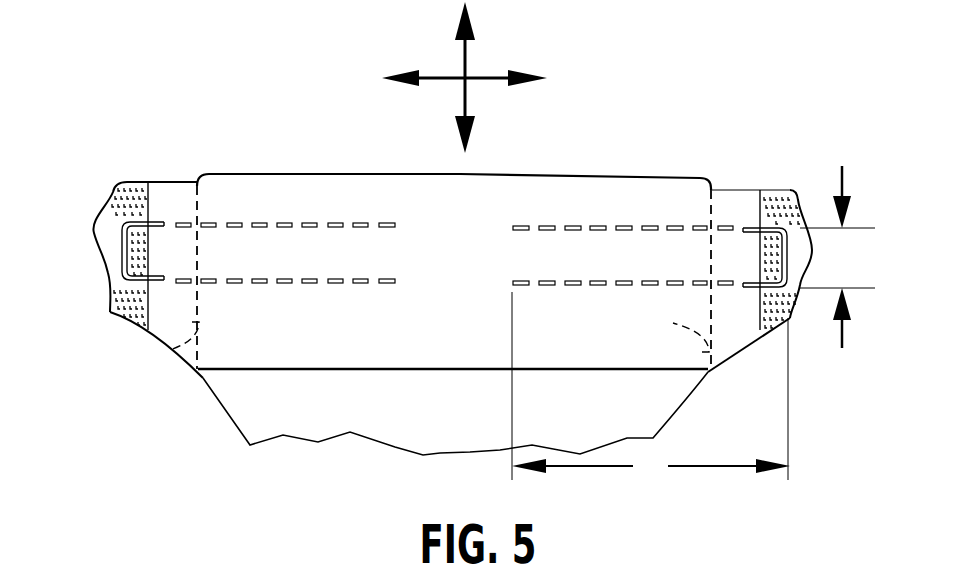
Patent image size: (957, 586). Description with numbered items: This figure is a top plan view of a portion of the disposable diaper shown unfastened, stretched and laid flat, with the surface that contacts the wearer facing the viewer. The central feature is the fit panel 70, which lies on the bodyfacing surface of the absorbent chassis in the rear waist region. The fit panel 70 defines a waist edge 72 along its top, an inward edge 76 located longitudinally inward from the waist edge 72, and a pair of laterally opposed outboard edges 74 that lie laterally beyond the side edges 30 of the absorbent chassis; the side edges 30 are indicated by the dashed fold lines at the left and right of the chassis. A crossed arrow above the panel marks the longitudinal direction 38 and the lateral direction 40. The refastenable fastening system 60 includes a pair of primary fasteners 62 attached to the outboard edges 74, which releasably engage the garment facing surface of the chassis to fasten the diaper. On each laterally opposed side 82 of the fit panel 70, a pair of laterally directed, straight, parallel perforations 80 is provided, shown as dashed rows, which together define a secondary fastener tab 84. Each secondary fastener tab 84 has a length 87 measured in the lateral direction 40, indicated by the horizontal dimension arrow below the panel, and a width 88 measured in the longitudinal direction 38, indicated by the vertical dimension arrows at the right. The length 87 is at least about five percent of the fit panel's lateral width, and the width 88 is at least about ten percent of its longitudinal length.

The side edges 30 is at (164, 351).
The longitudinal direction 38 is at (466, 50).
The lateral direction 40 is at (494, 80).
The refastenable fastening system 60 is at (108, 169).
The primary fasteners 62 is at (112, 317).
The fit panel 70 is at (630, 192).
The waist edge 72 is at (285, 174).
The outboard edges 74 is at (108, 197).
The inward edge 76 is at (603, 370).
The perforations 80 is at (598, 231).
The laterally opposed side 82 is at (165, 115).
The secondary fastener tab 84 is at (123, 257).
The length 87 is at (651, 386).
The width 88 is at (837, 272).